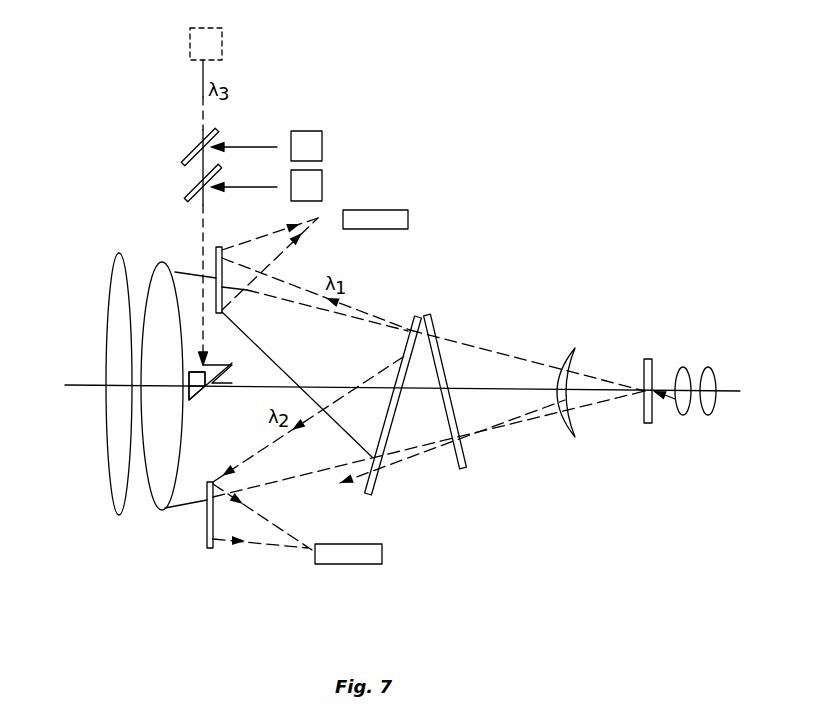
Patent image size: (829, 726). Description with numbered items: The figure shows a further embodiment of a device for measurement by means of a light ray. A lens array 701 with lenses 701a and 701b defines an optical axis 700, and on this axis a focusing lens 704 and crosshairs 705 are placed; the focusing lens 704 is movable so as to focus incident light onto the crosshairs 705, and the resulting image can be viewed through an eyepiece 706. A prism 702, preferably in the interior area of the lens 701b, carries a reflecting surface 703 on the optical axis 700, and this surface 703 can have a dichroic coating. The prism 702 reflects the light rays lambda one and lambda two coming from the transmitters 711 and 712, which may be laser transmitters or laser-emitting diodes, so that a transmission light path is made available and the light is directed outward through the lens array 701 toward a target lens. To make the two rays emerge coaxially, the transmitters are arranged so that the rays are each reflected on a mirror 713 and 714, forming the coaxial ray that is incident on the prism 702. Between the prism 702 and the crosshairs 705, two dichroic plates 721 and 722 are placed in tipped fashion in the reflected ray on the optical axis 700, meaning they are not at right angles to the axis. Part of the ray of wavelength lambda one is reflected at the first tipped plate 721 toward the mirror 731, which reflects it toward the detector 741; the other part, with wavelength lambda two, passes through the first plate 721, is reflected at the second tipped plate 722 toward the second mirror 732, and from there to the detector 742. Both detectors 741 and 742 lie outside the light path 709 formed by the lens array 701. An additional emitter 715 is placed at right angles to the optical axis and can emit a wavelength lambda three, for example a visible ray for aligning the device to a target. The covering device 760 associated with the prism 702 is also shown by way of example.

The optical axis 700 is at (379, 385).
The lens array 701 is at (106, 400).
The lens 701a is at (112, 278).
The lens 701b is at (160, 263).
The prism 702 is at (189, 378).
The reflecting surface 703 is at (190, 400).
The focusing lens 704 is at (577, 438).
The crosshairs 705 is at (657, 348).
The eyepiece 706 is at (693, 442).
The light path 709 is at (497, 350).
The transmitter 711 is at (323, 136).
The transmitter 712 is at (323, 181).
The mirror 713 is at (198, 145).
The mirror 714 is at (197, 192).
The additional emitter 715 is at (222, 42).
The first tipped dichroic plate 721 is at (375, 478).
The second tipped dichroic plate 722 is at (440, 320).
The mirror 731 is at (214, 262).
The second mirror 732 is at (207, 535).
The detector 741 is at (408, 219).
The detector 742 is at (382, 554).
The covering device 760 is at (232, 384).